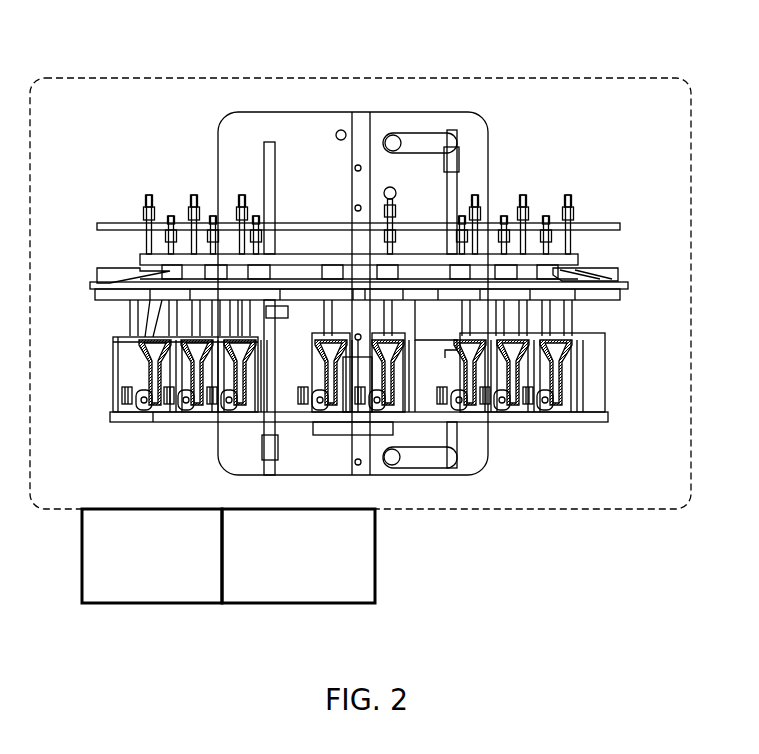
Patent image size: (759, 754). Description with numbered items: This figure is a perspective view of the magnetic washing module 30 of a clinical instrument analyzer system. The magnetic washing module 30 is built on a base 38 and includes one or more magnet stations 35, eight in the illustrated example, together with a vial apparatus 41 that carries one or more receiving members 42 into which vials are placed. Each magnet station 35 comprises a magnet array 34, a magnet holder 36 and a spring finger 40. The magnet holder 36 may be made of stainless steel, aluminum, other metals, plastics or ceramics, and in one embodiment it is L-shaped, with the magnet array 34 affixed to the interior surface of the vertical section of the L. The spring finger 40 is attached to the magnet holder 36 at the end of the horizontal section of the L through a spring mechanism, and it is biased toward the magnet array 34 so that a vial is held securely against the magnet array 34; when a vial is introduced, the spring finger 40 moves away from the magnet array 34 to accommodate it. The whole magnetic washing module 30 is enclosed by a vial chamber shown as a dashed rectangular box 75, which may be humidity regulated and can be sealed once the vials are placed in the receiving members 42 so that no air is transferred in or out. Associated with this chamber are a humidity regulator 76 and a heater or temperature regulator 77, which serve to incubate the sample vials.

The magnetic washing module 30 is at (565, 43).
The rectangular box 75 is at (202, 78).
The humidity regulator 76 is at (142, 584).
The temperature regulator 77 is at (287, 584).
The vial apparatus 41 is at (620, 295).
The receiving member 42 is at (552, 293).
The magnet station 35 is at (365, 361).
The magnet holder 36 is at (113, 338).
The magnet array 34 is at (130, 360).
The spring finger 40 is at (150, 384).
The base 38 is at (547, 423).